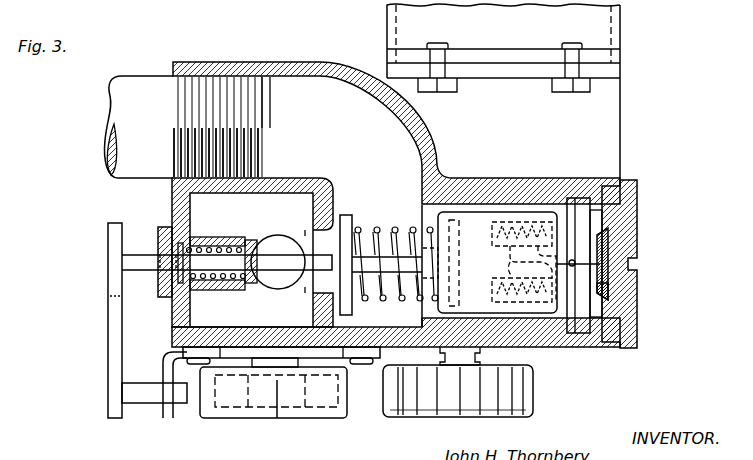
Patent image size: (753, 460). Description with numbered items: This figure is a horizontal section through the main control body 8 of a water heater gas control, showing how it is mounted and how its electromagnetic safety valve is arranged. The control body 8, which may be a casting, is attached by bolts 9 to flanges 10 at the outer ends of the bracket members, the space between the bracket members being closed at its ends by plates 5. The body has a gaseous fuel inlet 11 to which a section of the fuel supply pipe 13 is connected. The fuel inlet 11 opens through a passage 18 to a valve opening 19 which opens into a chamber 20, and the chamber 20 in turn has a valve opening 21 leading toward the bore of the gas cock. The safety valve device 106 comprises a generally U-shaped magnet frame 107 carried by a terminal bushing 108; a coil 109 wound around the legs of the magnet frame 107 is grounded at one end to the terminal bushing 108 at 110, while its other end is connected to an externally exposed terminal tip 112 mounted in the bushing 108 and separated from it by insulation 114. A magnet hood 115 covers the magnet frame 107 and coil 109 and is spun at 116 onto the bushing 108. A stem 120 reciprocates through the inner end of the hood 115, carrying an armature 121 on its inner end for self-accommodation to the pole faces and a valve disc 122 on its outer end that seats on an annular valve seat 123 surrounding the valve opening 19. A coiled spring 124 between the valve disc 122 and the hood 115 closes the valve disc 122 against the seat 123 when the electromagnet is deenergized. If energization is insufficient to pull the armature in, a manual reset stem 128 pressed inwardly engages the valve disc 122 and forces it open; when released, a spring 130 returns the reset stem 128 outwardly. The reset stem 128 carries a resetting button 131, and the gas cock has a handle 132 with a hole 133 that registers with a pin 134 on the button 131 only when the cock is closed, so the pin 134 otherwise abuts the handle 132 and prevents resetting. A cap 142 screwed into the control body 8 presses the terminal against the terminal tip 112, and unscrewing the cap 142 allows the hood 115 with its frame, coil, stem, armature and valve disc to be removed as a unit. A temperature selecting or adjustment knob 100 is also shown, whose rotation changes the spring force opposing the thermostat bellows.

The plate 5 is at (387, 25).
The main control body 8 is at (334, 55).
The bolt 9 is at (447, 86).
The flange 10 is at (508, 50).
The gaseous fuel inlet 11 is at (230, 34).
The fuel supply pipe 13 is at (122, 103).
The passage 18 is at (390, 169).
The valve opening 19 is at (313, 240).
The chamber 20 is at (268, 197).
The valve opening 21 is at (265, 242).
The temperature selecting or adjustment knob 100 is at (518, 390).
The device 106 is at (492, 222).
The magnet frame 107 is at (529, 233).
The terminal bushing 108 is at (570, 200).
The coil 109 is at (516, 270).
The ground connection 110 is at (568, 333).
The terminal tip 112 is at (608, 287).
The insulation 114 is at (612, 250).
The magnet hood 115 is at (473, 217).
The spun engagement 116 is at (562, 293).
The stem 120 is at (392, 247).
The armature 121 is at (453, 218).
The valve disc 122 is at (352, 217).
The annular valve seat 123 is at (340, 216).
The coiled spring 124 is at (388, 287).
The manual reset stem 128 is at (135, 258).
The spring 130 is at (210, 283).
The resetting button 131 is at (118, 337).
The handle 132 is at (293, 412).
The hole 133 is at (208, 405).
The pin 134 is at (143, 397).
The cap 142 is at (633, 210).